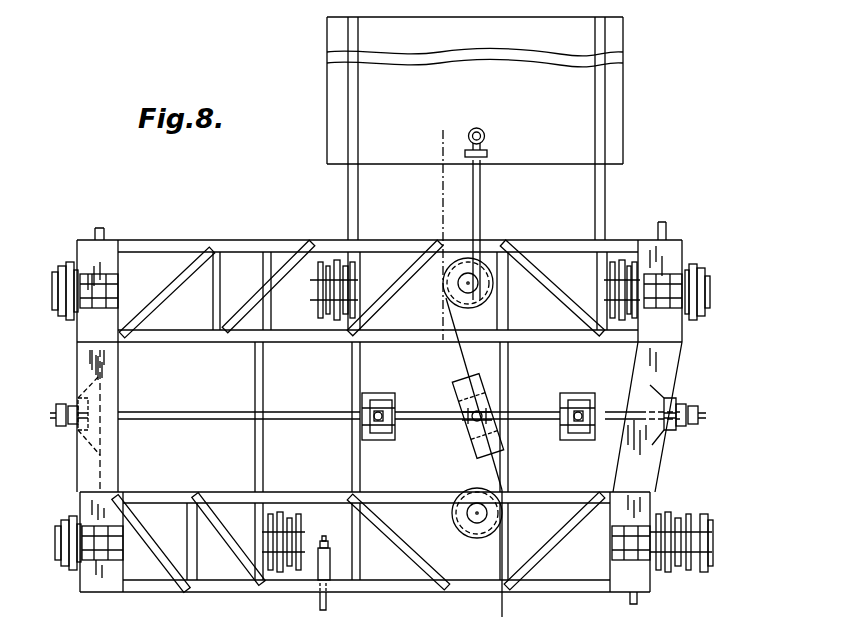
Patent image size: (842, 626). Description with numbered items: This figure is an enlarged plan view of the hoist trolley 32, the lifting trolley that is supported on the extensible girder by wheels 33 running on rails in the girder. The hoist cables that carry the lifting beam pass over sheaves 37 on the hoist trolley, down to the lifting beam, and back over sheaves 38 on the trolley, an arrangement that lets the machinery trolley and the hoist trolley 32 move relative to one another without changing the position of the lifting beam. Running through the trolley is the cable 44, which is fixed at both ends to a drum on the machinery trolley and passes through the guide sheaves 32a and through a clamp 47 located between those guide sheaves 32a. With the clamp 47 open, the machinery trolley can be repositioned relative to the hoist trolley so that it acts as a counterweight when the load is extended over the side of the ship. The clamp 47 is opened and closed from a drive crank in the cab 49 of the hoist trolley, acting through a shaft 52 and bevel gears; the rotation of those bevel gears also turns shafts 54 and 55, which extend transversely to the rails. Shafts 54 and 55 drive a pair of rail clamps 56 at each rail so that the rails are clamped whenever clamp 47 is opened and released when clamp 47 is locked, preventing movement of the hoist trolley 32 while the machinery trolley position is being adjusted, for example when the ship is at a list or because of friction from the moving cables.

The hoist trolley 32 is at (518, 594).
The guide sheaves 32a is at (457, 498).
The wheels 33 is at (64, 266).
The sheaves 37 is at (332, 260).
The sheaves 38 is at (342, 260).
The cable 44 is at (441, 143).
The clamp 47 is at (492, 398).
The cab 49 is at (518, 90).
The shaft 52 is at (482, 200).
The shaft 54 is at (398, 428).
The shaft 55 is at (318, 392).
The rail clamps 56 is at (56, 410).